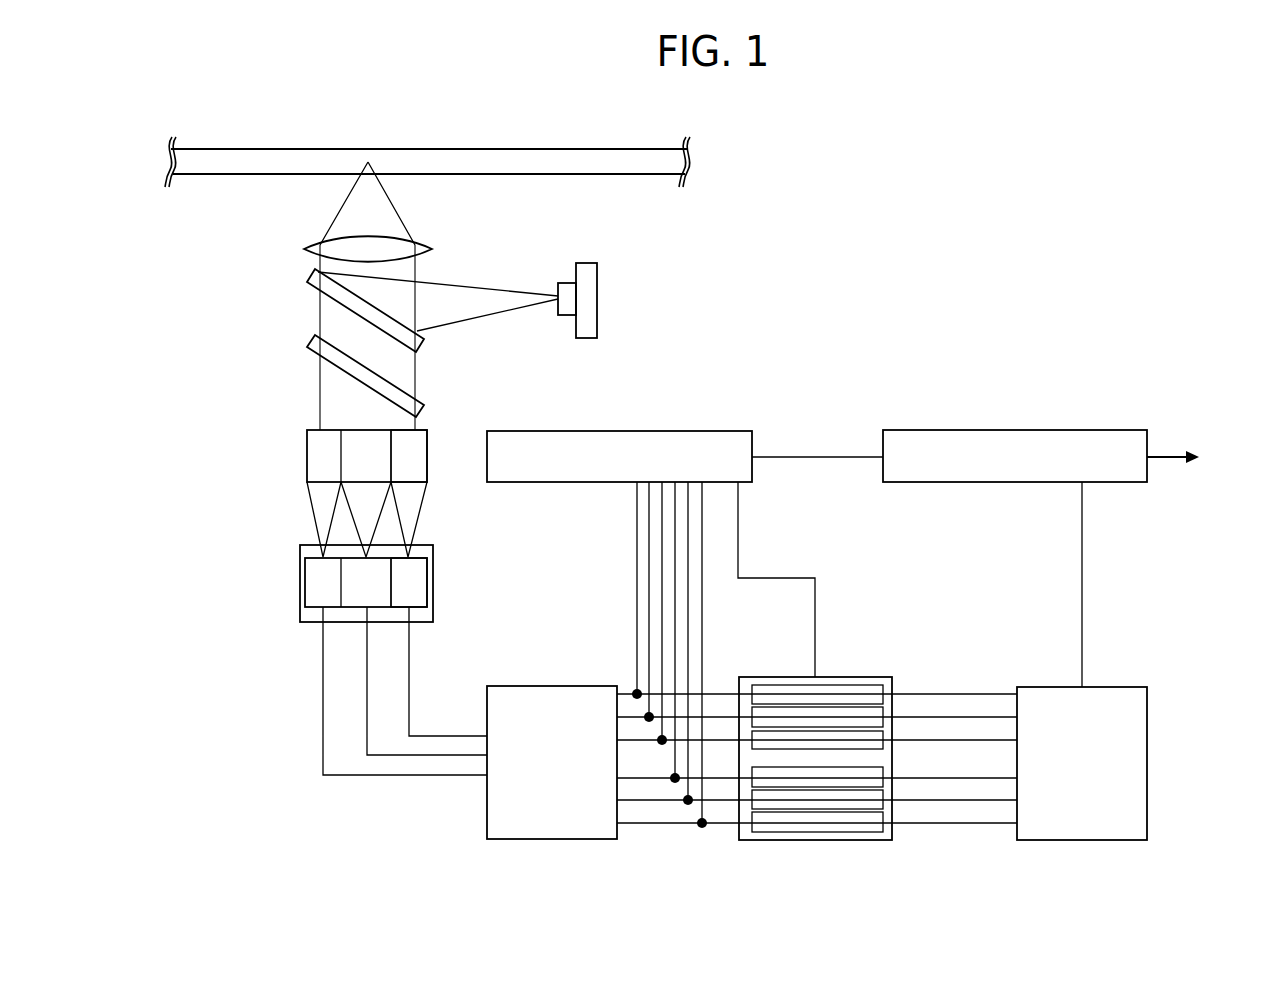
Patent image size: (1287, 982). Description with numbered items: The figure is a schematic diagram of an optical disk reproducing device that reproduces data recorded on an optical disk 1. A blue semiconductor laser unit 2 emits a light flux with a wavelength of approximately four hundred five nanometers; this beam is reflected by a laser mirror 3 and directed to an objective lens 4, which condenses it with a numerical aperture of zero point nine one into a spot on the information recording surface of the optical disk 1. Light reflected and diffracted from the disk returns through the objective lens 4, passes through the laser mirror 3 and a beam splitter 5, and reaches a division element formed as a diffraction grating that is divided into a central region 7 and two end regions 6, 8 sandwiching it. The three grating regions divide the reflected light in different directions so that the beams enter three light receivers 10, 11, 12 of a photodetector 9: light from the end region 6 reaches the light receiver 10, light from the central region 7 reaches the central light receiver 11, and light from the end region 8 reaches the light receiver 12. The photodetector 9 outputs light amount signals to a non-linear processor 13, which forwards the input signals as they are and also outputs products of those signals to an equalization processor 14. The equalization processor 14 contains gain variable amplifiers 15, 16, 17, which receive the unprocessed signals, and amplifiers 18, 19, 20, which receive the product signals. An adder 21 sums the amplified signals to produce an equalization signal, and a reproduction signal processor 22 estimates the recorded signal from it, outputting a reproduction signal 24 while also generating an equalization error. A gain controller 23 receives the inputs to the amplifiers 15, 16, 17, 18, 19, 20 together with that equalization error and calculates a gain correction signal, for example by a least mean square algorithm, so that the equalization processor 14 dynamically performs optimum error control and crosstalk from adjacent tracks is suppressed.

The optical disk 1 is at (221, 160).
The blue semiconductor laser unit 2 is at (592, 277).
The laser mirror 3 is at (330, 286).
The objective lens 4 is at (342, 248).
The beam splitter 5 is at (328, 353).
The end region 6 is at (320, 443).
The central region 7 is at (355, 458).
The end region 8 is at (420, 465).
The photodetector 9 is at (312, 552).
The light receiver 10 is at (325, 581).
The light receiver 11 is at (357, 590).
The light receiver 12 is at (409, 587).
The non-linear processor 13 is at (548, 821).
The equalization processor 14 is at (746, 832).
The amplifier 15 is at (768, 690).
The amplifier 16 is at (825, 718).
The amplifier 17 is at (867, 740).
The amplifier 18 is at (775, 775).
The amplifier 19 is at (822, 800).
The amplifier 20 is at (872, 822).
The adder 21 is at (1055, 820).
The reproduction signal processor 22 is at (1036, 440).
The gain controller 23 is at (700, 440).
The reproduction signal 24 is at (1200, 455).